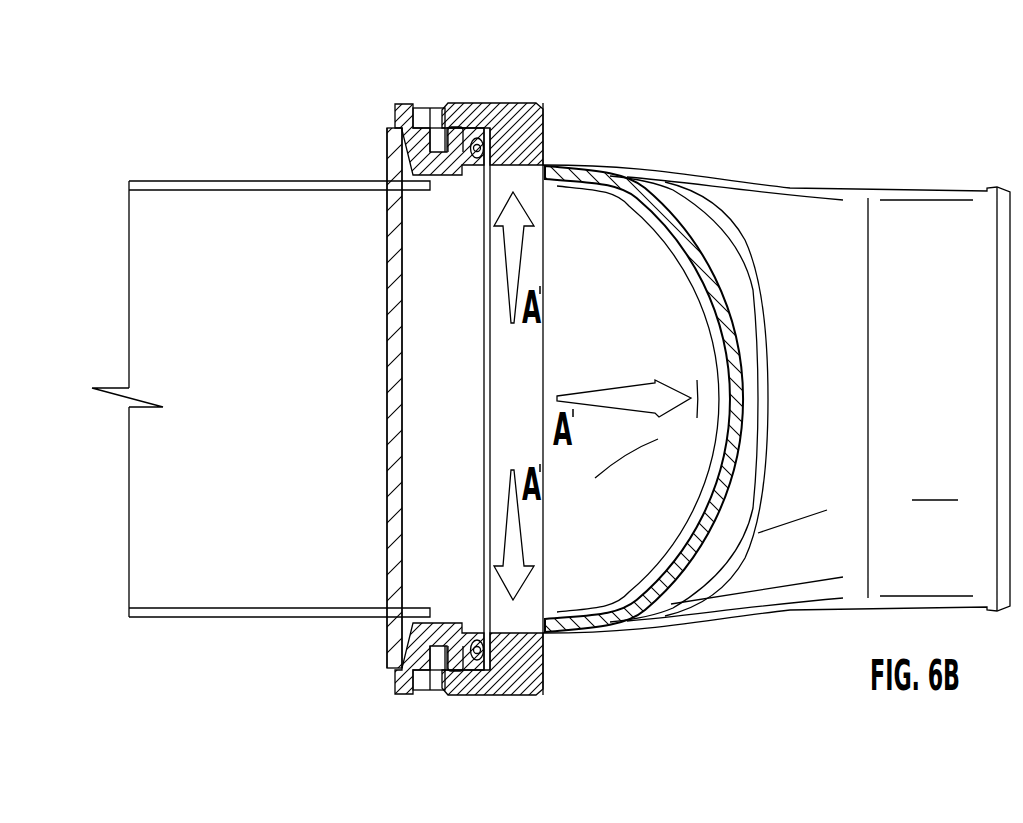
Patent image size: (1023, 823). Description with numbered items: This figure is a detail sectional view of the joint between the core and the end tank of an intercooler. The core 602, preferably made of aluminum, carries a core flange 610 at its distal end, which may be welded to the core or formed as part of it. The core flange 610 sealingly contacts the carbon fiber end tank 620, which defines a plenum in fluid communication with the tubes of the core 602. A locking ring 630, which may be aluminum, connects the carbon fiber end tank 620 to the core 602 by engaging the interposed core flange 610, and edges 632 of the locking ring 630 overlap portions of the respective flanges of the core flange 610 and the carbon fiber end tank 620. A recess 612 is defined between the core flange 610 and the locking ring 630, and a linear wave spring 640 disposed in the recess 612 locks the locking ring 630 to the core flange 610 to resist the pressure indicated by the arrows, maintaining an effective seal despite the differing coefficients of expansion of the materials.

The core 602 is at (200, 176).
The core flange 610 is at (392, 100).
The recess 612 is at (400, 673).
The carbon fiber end tank 620 is at (789, 184).
The locking ring 630 is at (486, 98).
The edges 632 is at (546, 135).
The linear wave spring 640 is at (436, 104).